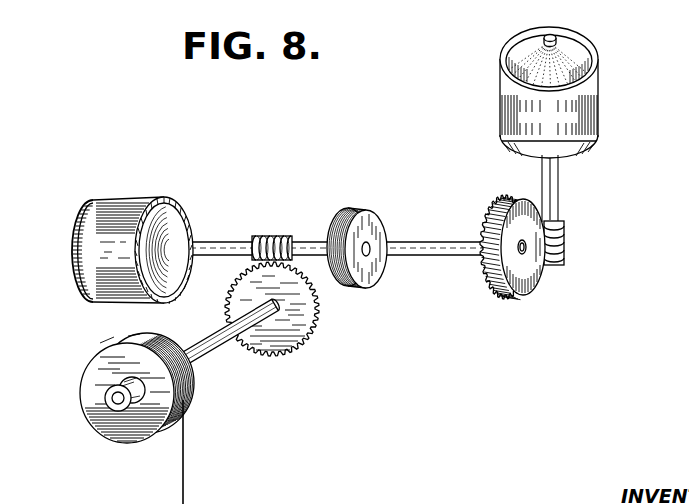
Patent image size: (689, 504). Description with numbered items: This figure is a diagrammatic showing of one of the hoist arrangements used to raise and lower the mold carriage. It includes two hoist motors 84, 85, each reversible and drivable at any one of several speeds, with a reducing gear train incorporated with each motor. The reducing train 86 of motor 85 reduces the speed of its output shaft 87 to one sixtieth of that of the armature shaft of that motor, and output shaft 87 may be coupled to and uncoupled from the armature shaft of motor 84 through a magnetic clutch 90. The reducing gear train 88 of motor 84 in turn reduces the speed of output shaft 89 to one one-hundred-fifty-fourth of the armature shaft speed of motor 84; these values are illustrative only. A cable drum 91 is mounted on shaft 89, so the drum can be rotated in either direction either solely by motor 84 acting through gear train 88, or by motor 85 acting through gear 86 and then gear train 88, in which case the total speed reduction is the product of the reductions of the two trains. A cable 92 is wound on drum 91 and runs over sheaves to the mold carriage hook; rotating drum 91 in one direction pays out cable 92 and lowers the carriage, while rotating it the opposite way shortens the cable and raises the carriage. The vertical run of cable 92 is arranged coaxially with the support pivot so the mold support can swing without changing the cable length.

The hoist motor 84 is at (115, 200).
The hoist motor 85 is at (578, 107).
The reducing gear train 86 is at (549, 274).
The output shaft 87 is at (432, 258).
The reducing gear train 88 is at (252, 239).
The output shaft 89 is at (213, 348).
The magnetic clutch 90 is at (368, 216).
The cable drum 91 is at (92, 418).
The cable 92 is at (185, 479).